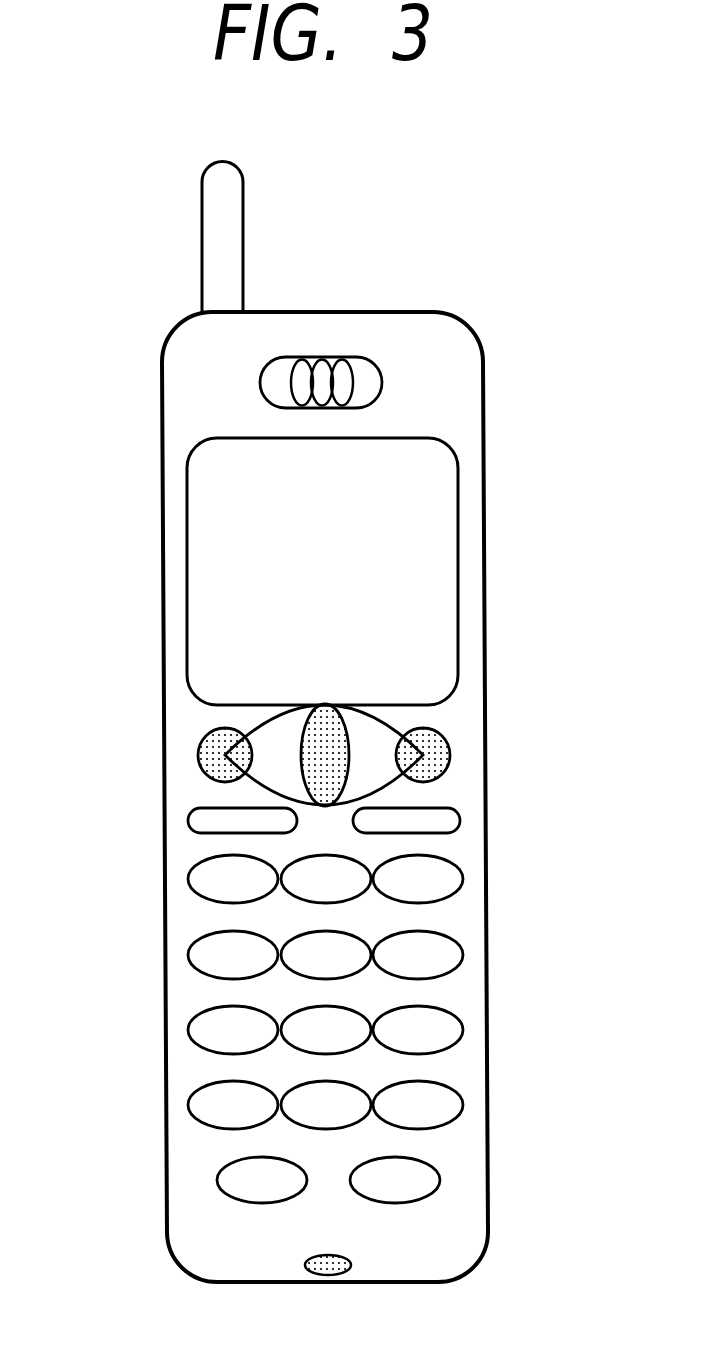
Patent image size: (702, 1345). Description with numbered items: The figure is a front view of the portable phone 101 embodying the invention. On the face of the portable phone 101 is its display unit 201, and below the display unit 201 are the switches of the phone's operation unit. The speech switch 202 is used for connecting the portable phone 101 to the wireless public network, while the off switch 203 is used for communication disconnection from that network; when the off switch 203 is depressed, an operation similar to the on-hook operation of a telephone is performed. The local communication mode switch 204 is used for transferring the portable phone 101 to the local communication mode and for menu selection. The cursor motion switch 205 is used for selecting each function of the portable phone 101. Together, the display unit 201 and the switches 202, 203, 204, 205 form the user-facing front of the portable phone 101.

The portable phone 101 is at (483, 398).
The display unit 201 is at (188, 493).
The speech switch 202 is at (198, 745).
The off switch 203 is at (450, 742).
The local communication mode switch 204 is at (217, 1170).
The cursor motion switch 205 is at (347, 723).